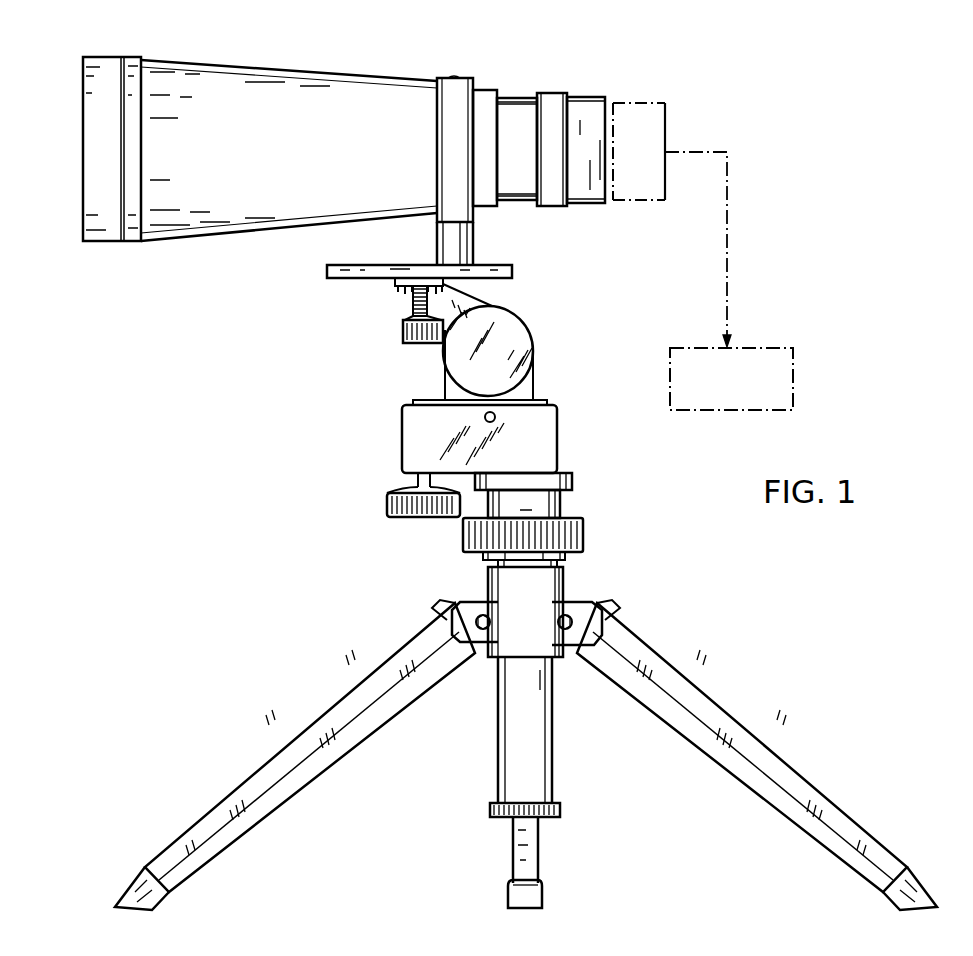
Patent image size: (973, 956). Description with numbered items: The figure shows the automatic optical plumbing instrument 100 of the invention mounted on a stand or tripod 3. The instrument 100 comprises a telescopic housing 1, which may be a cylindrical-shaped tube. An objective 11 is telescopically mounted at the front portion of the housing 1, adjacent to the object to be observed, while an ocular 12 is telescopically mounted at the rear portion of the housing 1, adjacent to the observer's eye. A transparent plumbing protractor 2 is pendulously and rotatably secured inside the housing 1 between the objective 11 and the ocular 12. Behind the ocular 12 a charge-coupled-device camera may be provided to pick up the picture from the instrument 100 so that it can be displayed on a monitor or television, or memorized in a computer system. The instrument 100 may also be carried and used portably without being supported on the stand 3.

The automatic optical plumbing instrument 100 is at (283, 44).
The telescopic housing 1 is at (401, 78).
The objective 11 is at (117, 79).
The transparent plumbing protractor 2 is at (352, 132).
The ocular 12 is at (576, 126).
The stand or tripod 3 is at (329, 280).